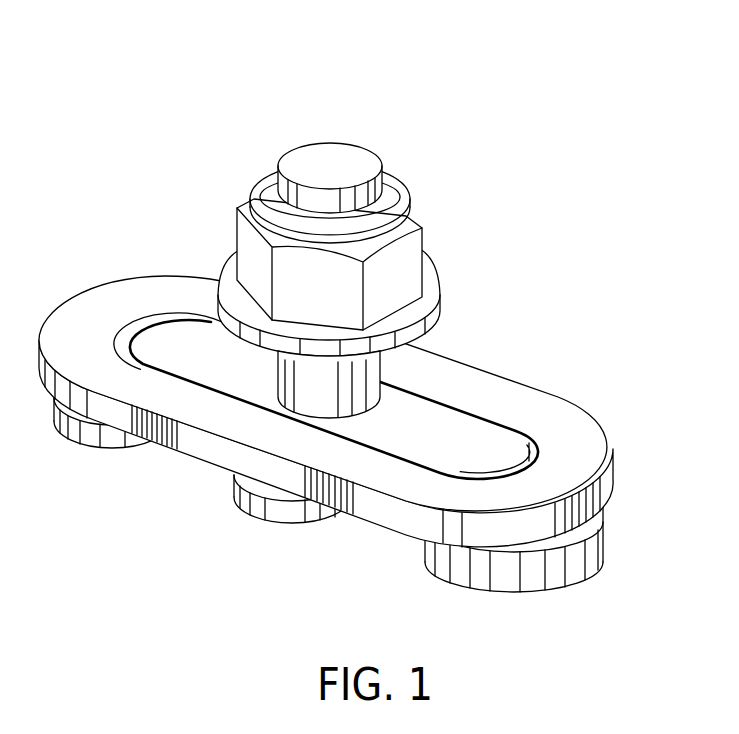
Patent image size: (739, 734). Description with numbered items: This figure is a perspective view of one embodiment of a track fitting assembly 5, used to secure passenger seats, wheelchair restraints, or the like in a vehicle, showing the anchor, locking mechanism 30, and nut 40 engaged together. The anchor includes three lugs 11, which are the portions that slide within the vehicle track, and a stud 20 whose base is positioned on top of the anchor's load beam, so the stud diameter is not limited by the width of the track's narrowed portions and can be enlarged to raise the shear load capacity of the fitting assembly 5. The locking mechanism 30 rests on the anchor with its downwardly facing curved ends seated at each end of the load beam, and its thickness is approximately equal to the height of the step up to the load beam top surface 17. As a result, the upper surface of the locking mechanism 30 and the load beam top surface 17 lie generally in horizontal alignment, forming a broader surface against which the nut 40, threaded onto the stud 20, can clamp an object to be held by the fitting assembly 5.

The track fitting assembly 5 is at (349, 355).
The lugs 11 is at (93, 440).
The load beam top surface 17 is at (158, 345).
The stud 20 is at (329, 167).
The locking mechanism 30 is at (349, 387).
The nut 40 is at (256, 209).